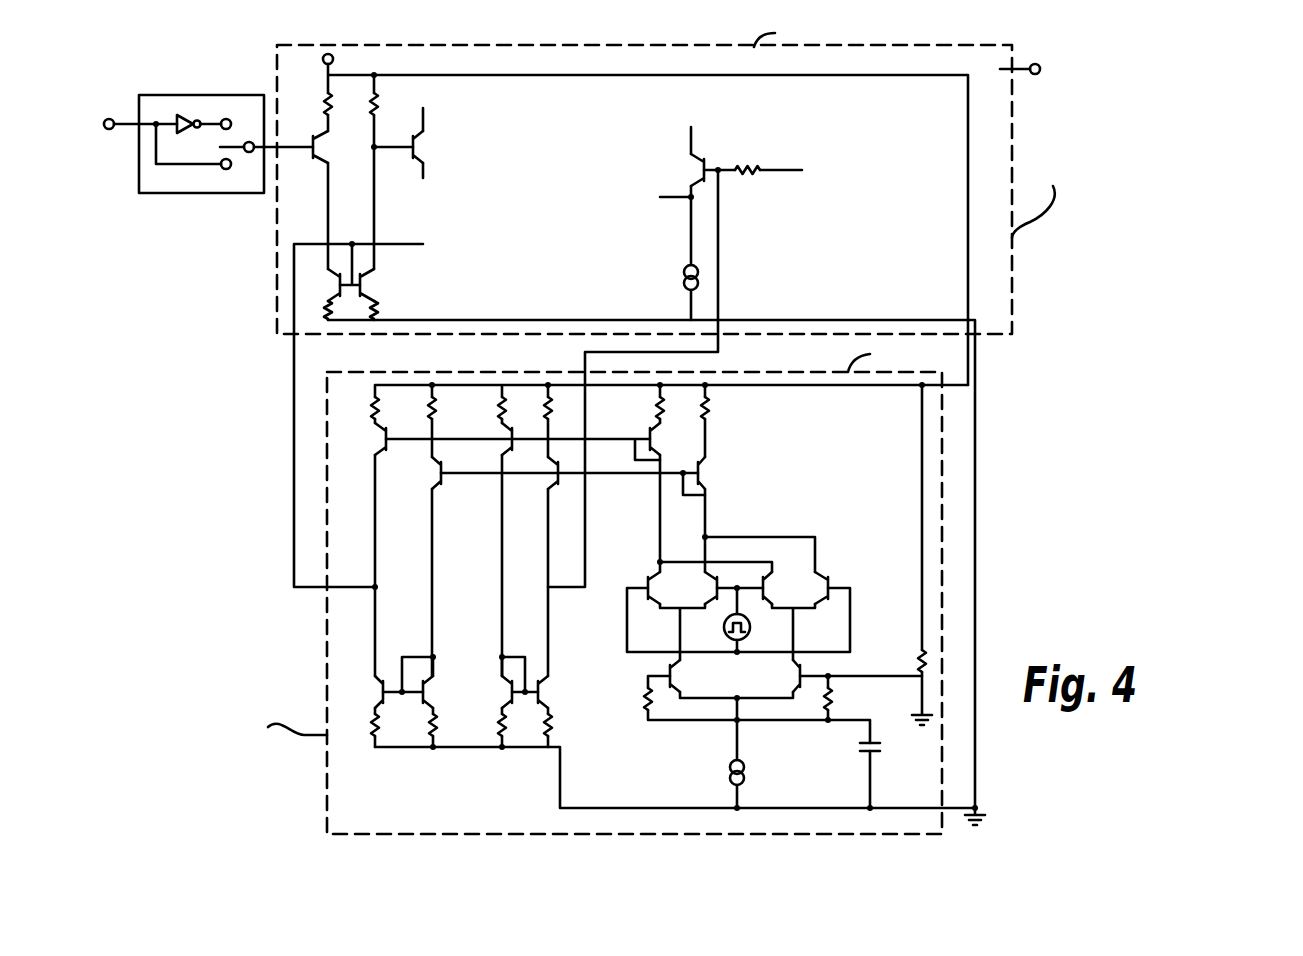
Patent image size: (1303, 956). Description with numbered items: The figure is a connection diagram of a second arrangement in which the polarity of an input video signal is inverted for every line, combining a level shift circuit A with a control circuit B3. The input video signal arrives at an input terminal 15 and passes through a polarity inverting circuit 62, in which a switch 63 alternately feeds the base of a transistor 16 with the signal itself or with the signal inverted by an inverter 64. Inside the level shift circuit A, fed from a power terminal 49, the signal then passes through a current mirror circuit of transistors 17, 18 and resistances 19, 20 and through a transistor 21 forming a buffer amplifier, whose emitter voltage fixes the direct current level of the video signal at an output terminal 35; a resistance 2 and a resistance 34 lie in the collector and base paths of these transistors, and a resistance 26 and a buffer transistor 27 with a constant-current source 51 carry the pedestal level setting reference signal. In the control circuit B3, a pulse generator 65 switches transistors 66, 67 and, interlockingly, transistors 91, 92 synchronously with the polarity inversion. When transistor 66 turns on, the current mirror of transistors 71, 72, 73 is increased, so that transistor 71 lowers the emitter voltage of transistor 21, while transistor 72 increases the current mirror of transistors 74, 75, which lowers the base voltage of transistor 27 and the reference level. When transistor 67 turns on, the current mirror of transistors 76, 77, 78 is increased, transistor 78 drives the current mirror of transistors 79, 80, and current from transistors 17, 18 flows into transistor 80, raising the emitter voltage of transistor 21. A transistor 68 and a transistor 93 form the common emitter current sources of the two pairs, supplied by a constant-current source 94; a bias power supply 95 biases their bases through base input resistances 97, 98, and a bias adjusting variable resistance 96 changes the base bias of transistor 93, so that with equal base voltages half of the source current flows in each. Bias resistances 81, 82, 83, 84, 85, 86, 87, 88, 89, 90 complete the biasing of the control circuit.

The level shift circuit A is at (770, 178).
The control circuit B3 is at (548, 586).
The input terminal 15 is at (117, 111).
The polarity inverting circuit 62 is at (201, 131).
The inverter 64 is at (200, 114).
The switch 63 is at (242, 124).
The power terminal 49 is at (309, 67).
The output terminal 35 is at (1047, 53).
The resistor 2 is at (337, 101).
The resistance 34 is at (392, 103).
The transistor 16 is at (338, 147).
The transistor 21 is at (436, 147).
The transistor 17 is at (318, 285).
The transistor 18 is at (385, 285).
The resistance 19 is at (314, 311).
The resistance 20 is at (391, 313).
The transistor 27 is at (680, 171).
The resistance 26 is at (751, 154).
The constant-current source 51 is at (670, 276).
The bias resistance 81 is at (393, 404).
The bias resistance 82 is at (448, 404).
The bias resistance 83 is at (518, 404).
The bias resistance 84 is at (565, 404).
The bias resistance 85 is at (676, 404).
The bias resistance 86 is at (721, 404).
The transistor 71 is at (364, 440).
The transistor 72 is at (489, 444).
The transistor 73 is at (672, 439).
The transistor 78 is at (417, 473).
The transistor 77 is at (535, 478).
The transistor 76 is at (720, 473).
The transistor 66 is at (639, 574).
The transistor 67 is at (697, 588).
The transistor 91 is at (784, 588).
The transistor 92 is at (833, 597).
The pulse generator 65 is at (755, 628).
The transistor 68 is at (692, 676).
The transistor 93 is at (781, 676).
The base input resistance 97 is at (632, 699).
The base input resistance 98 is at (844, 699).
The bias adjusting variable resistance 96 is at (904, 665).
The bias power supply 95 is at (887, 748).
The constant-current source 94 is at (752, 769).
The transistor 80 is at (359, 692).
The transistor 79 is at (444, 692).
The transistor 74 is at (492, 692).
The transistor 75 is at (561, 692).
The bias resistance 90 is at (357, 721).
The bias resistance 89 is at (449, 721).
The bias resistance 88 is at (517, 721).
The bias resistance 87 is at (564, 721).